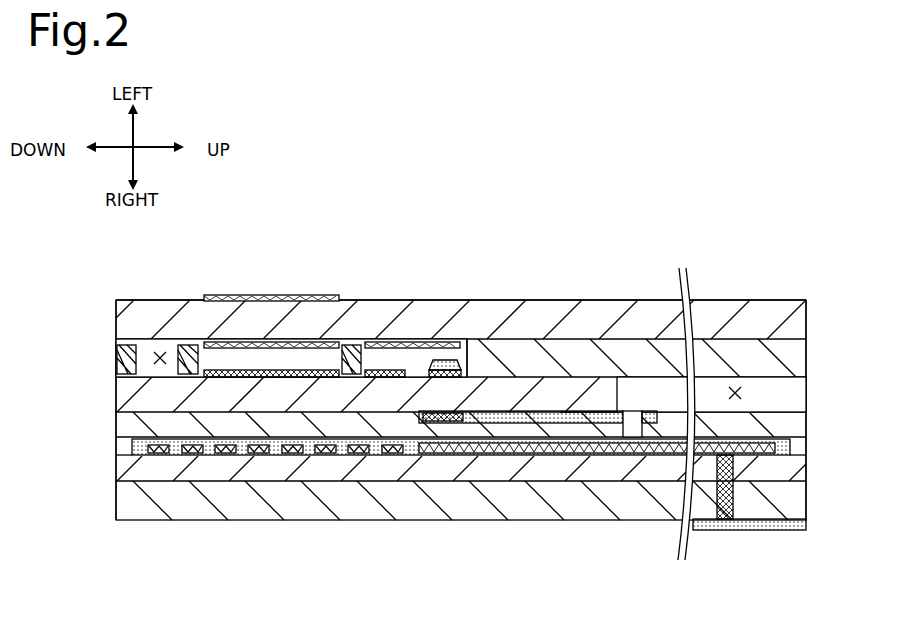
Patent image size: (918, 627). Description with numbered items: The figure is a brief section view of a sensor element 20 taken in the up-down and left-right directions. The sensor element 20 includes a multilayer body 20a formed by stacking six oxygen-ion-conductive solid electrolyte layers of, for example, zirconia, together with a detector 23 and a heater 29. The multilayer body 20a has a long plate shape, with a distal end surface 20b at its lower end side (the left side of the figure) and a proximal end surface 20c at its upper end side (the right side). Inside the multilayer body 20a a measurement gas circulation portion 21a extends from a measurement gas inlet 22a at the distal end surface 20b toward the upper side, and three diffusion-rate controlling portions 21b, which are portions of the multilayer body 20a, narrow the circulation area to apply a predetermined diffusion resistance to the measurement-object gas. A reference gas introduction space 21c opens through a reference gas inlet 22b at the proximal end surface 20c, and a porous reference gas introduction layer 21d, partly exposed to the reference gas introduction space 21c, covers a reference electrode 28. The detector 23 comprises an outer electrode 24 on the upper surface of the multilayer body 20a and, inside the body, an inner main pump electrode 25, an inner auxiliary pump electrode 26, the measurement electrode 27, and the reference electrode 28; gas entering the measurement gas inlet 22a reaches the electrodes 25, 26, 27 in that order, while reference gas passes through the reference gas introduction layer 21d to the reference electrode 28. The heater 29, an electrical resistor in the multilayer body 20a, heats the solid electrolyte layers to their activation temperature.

The sensor element 20 is at (710, 222).
The multilayer body 20a is at (625, 299).
The distal end surface 20b is at (116, 430).
The proximal end surface 20c is at (806, 420).
The measurement gas circulation portion 21a is at (160, 350).
The diffusion-rate controlling portion 21b is at (128, 344).
The reference gas introduction space 21c is at (734, 386).
The reference gas introduction layer 21d is at (589, 410).
The measurement gas inlet 22a is at (116, 343).
The reference gas inlet 22b is at (806, 392).
The detector 23 is at (429, 228).
The outer electrode 24 is at (230, 294).
The inner main pump electrode 25 is at (280, 369).
The inner auxiliary pump electrode 26 is at (396, 369).
The measurement electrode 27 is at (441, 359).
The reference electrode 28 is at (465, 410).
The heater 29 is at (324, 456).